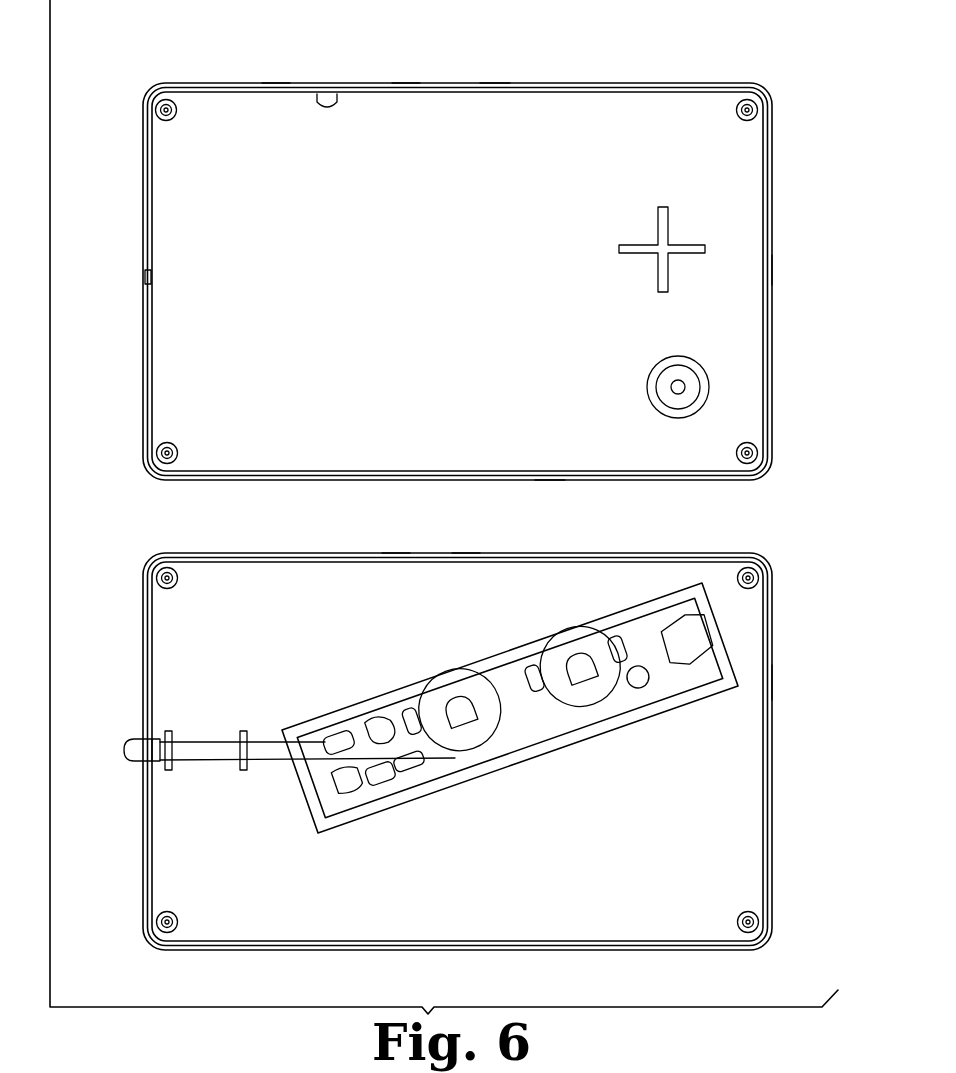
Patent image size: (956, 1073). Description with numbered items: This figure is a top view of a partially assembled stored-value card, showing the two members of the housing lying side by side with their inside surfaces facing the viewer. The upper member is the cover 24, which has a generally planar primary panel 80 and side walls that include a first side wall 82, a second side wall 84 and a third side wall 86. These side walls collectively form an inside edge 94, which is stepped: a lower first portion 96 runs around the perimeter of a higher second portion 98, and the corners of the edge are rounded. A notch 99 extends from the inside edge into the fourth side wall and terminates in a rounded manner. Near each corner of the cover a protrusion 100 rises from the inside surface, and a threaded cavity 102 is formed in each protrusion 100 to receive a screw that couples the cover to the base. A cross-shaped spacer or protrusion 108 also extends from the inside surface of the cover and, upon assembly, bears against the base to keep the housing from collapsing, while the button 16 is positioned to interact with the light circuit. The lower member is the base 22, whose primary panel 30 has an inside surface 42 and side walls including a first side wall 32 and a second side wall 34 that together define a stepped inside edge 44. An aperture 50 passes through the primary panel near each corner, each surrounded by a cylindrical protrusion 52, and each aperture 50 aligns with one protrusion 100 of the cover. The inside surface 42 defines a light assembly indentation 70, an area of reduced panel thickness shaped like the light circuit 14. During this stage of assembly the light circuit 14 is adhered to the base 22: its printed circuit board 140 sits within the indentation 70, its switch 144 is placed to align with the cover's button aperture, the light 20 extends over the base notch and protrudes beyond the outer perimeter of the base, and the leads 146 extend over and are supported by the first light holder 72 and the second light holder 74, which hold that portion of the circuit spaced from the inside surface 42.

The light circuit 14 is at (588, 732).
The button 16 is at (709, 387).
The light 20 is at (137, 748).
The first housing member (base) 22 is at (788, 586).
The second housing member (cover) 24 is at (760, 77).
The primary panel 30 is at (292, 595).
The first side wall 32 is at (465, 553).
The second side wall 34 is at (774, 683).
The inside surface 42 is at (735, 860).
The inside edge 44 is at (395, 553).
The aperture 50 is at (760, 573).
The cylindrical protrusion 52 is at (742, 571).
The light assembly indentation 70 is at (722, 690).
The first light holder 72 is at (170, 773).
The second light holder 74 is at (243, 773).
The primary panel 80 is at (642, 148).
The first side wall 82 is at (549, 481).
The second side wall 84 is at (773, 270).
The third side wall 86 is at (497, 83).
The inside edge 94 is at (406, 83).
The first portion 96 is at (275, 83).
The second portion 98 is at (333, 93).
The notch 99 is at (145, 277).
The protrusion 100 is at (176, 106).
The threaded cavity 102 is at (160, 99).
The spacer or protrusion 108 is at (690, 245).
The printed circuit board 140 is at (706, 606).
The switch 144 is at (692, 640).
The leads 146 is at (228, 740).